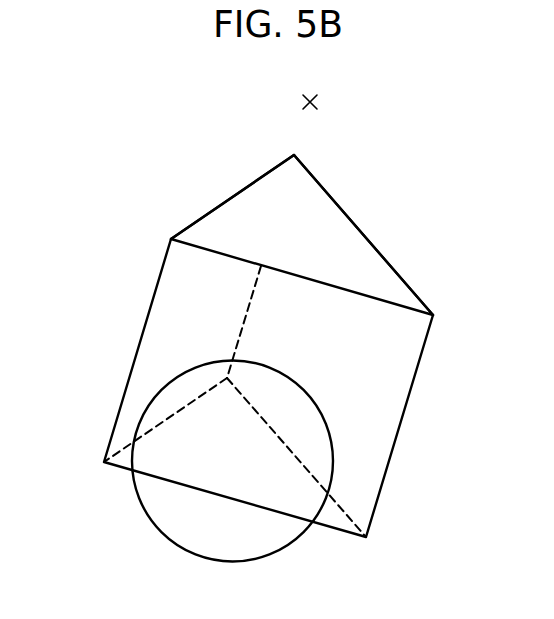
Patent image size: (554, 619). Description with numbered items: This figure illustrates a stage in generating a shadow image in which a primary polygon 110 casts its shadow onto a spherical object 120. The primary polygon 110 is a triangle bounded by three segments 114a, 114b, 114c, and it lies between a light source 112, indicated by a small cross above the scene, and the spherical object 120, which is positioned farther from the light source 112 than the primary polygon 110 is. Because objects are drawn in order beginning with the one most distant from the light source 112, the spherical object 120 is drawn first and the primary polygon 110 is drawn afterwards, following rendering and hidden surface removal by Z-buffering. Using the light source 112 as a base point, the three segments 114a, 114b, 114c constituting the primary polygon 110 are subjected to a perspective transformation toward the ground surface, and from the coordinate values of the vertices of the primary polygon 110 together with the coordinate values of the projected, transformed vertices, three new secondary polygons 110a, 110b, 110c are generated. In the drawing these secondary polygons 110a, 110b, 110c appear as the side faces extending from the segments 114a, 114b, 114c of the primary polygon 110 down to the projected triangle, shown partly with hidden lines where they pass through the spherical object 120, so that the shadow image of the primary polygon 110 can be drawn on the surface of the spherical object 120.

The primary polygon 110 is at (307, 194).
The secondary polygon 110a is at (185, 376).
The secondary polygon 110b is at (167, 322).
The secondary polygon 110c is at (370, 352).
The light source 112 is at (318, 101).
The segment 114a is at (288, 275).
The segment 114b is at (228, 198).
The segment 114c is at (383, 205).
The spherical object 120 is at (162, 527).